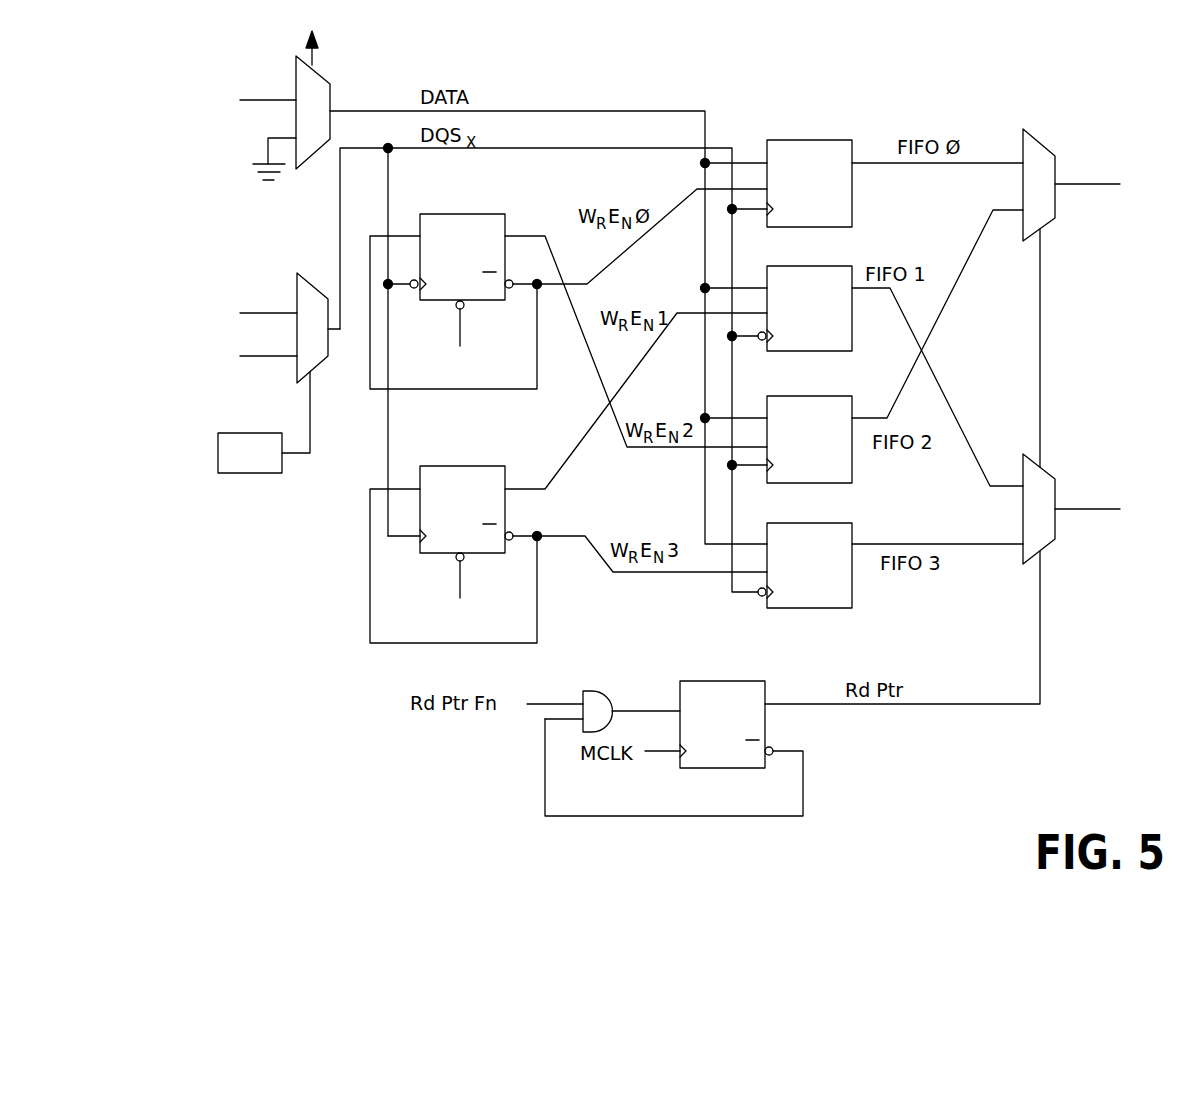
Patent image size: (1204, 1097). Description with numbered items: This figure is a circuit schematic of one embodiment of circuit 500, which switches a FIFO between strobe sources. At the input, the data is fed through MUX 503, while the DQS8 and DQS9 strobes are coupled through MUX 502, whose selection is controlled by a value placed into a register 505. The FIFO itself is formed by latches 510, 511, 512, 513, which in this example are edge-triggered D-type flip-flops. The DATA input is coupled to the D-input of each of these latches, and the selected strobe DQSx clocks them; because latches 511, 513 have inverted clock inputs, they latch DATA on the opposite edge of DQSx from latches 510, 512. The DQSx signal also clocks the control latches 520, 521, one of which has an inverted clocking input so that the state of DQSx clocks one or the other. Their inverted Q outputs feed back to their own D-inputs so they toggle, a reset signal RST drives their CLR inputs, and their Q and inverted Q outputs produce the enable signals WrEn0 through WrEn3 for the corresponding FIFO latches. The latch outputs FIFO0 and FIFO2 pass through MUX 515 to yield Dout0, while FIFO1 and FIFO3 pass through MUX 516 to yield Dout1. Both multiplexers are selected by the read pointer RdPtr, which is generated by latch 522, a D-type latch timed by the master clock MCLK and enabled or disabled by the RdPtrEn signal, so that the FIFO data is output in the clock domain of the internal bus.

The circuit 500 is at (866, 84).
The MUX 502 is at (297, 270).
The MUX 503 is at (328, 80).
The register 505 is at (238, 474).
The latch 510 is at (809, 183).
The latch 511 is at (805, 308).
The latch 512 is at (809, 439).
The latch 513 is at (805, 565).
The MUX 515 is at (1037, 144).
The MUX 516 is at (1045, 478).
The control latch 520 is at (472, 213).
The control latch 521 is at (472, 465).
The latch 522 is at (674, 748).